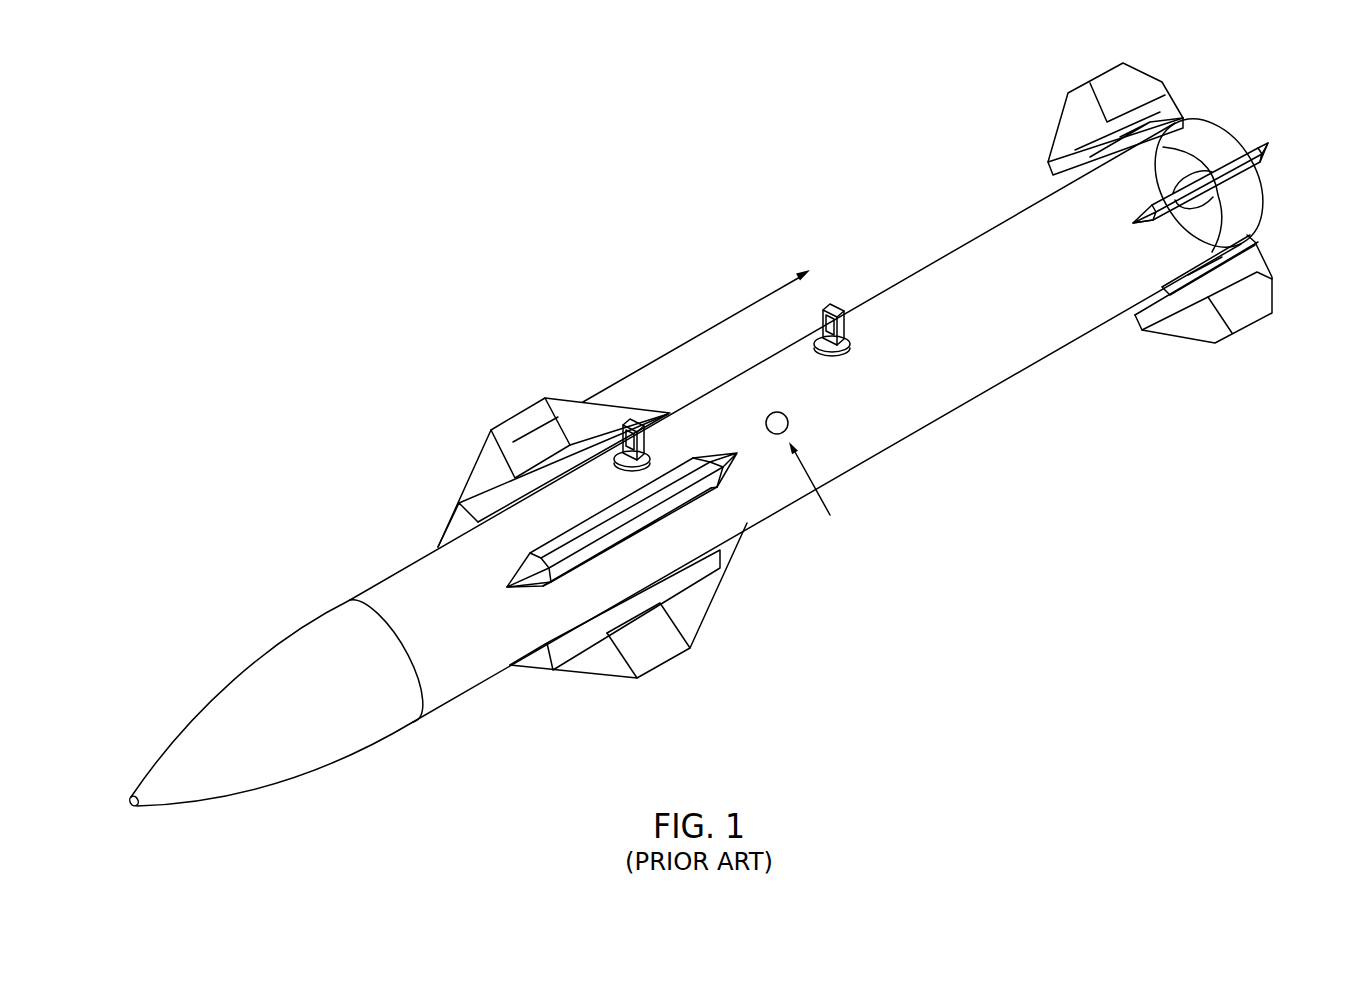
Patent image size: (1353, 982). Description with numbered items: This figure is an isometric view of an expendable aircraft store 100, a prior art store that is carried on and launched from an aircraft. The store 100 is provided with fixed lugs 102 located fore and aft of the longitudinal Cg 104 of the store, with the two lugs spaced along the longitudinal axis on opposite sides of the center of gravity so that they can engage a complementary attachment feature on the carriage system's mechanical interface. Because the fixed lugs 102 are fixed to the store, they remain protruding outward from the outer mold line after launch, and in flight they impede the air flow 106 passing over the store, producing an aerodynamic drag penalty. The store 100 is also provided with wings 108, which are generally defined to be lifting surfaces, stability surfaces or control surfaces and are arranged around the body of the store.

The expendable aircraft store 100 is at (342, 472).
The fixed lugs 102 is at (646, 432).
The longitudinal Cg 104 is at (886, 524).
The air flow 106 is at (731, 346).
The wings 108 is at (522, 412).